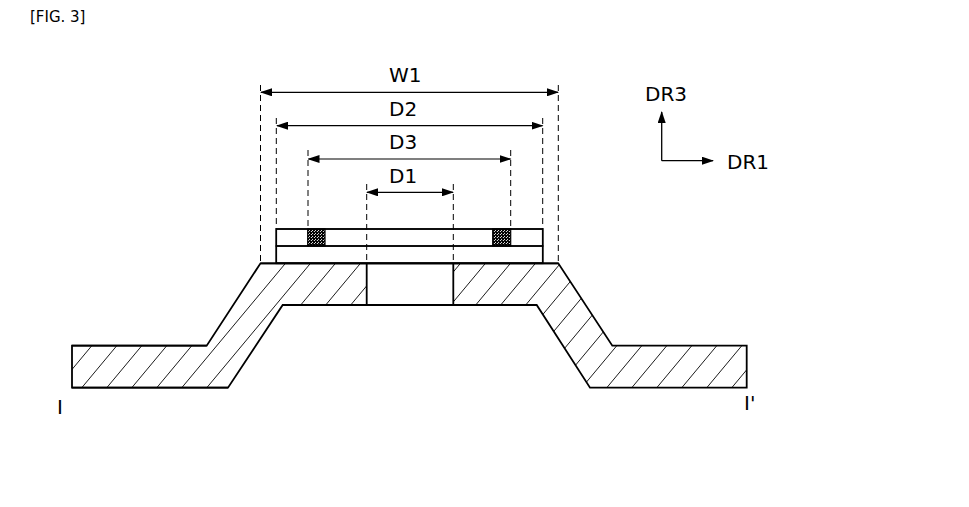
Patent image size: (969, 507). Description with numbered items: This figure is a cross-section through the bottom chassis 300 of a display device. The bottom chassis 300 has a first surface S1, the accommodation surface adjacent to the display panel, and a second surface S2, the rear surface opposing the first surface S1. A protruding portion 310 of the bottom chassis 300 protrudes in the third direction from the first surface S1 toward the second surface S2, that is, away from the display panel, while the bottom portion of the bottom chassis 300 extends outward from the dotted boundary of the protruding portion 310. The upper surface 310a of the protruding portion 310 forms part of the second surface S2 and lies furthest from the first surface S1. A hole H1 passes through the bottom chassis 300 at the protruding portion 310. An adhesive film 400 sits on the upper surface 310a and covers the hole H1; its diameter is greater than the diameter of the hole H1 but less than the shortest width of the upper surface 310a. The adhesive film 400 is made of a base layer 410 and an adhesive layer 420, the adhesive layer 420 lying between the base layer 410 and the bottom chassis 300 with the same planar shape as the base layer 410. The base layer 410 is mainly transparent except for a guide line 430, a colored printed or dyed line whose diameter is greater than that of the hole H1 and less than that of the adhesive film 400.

The bottom chassis 300 is at (459, 367).
The protruding portion 310 is at (207, 346).
The upper surface 310a is at (267, 263).
The adhesive film 400 is at (495, 244).
The base layer 410 is at (533, 234).
The adhesive layer 420 is at (532, 253).
The guide line 430 is at (504, 240).
The hole H1 is at (415, 287).
The first surface S1 is at (97, 390).
The second surface S2 is at (101, 345).